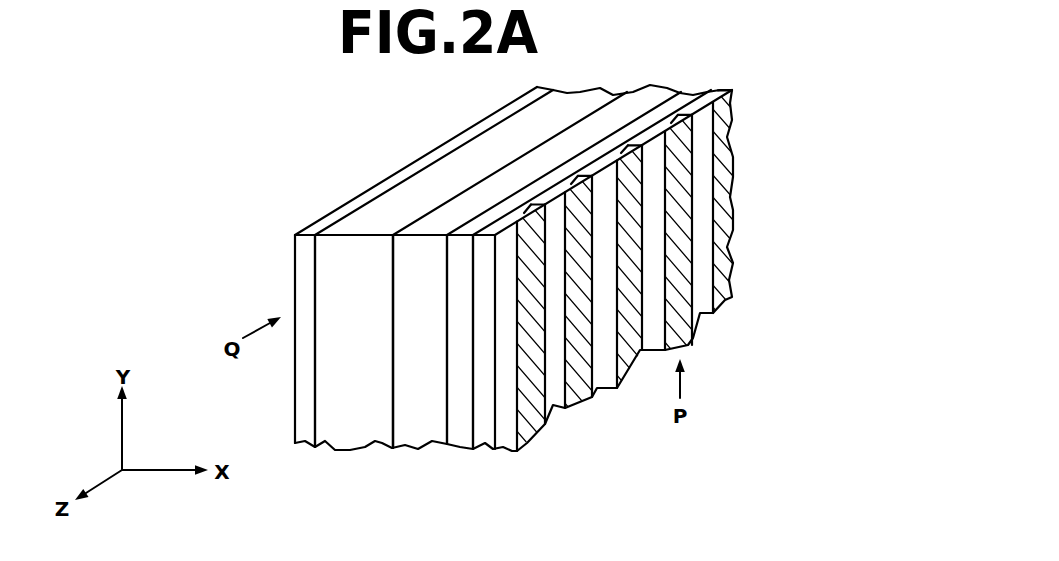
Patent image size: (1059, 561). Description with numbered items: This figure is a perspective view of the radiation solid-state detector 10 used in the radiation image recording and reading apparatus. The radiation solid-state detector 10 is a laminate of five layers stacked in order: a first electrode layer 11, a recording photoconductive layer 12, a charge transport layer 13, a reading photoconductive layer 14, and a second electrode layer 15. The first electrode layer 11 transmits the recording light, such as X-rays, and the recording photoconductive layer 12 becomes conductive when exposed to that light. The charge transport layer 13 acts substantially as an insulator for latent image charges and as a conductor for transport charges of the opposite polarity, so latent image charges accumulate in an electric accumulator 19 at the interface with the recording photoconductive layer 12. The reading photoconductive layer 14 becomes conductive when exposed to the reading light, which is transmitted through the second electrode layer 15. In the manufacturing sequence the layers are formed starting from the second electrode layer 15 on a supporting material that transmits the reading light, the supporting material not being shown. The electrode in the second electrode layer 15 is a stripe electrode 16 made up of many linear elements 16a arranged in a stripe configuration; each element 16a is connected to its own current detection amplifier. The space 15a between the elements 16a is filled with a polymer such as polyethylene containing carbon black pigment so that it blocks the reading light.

The radiation solid-state detector 10 is at (385, 154).
The first electrode layer 11 is at (305, 434).
The recording photoconductive layer 12 is at (340, 433).
The charge transport layer 13 is at (418, 431).
The reading photoconductive layer 14 is at (460, 424).
The second electrode layer 15 is at (482, 431).
The space 15a is at (700, 315).
The stripe electrode 16 is at (608, 488).
The element 16a is at (521, 439).
The electric accumulator 19 is at (379, 415).